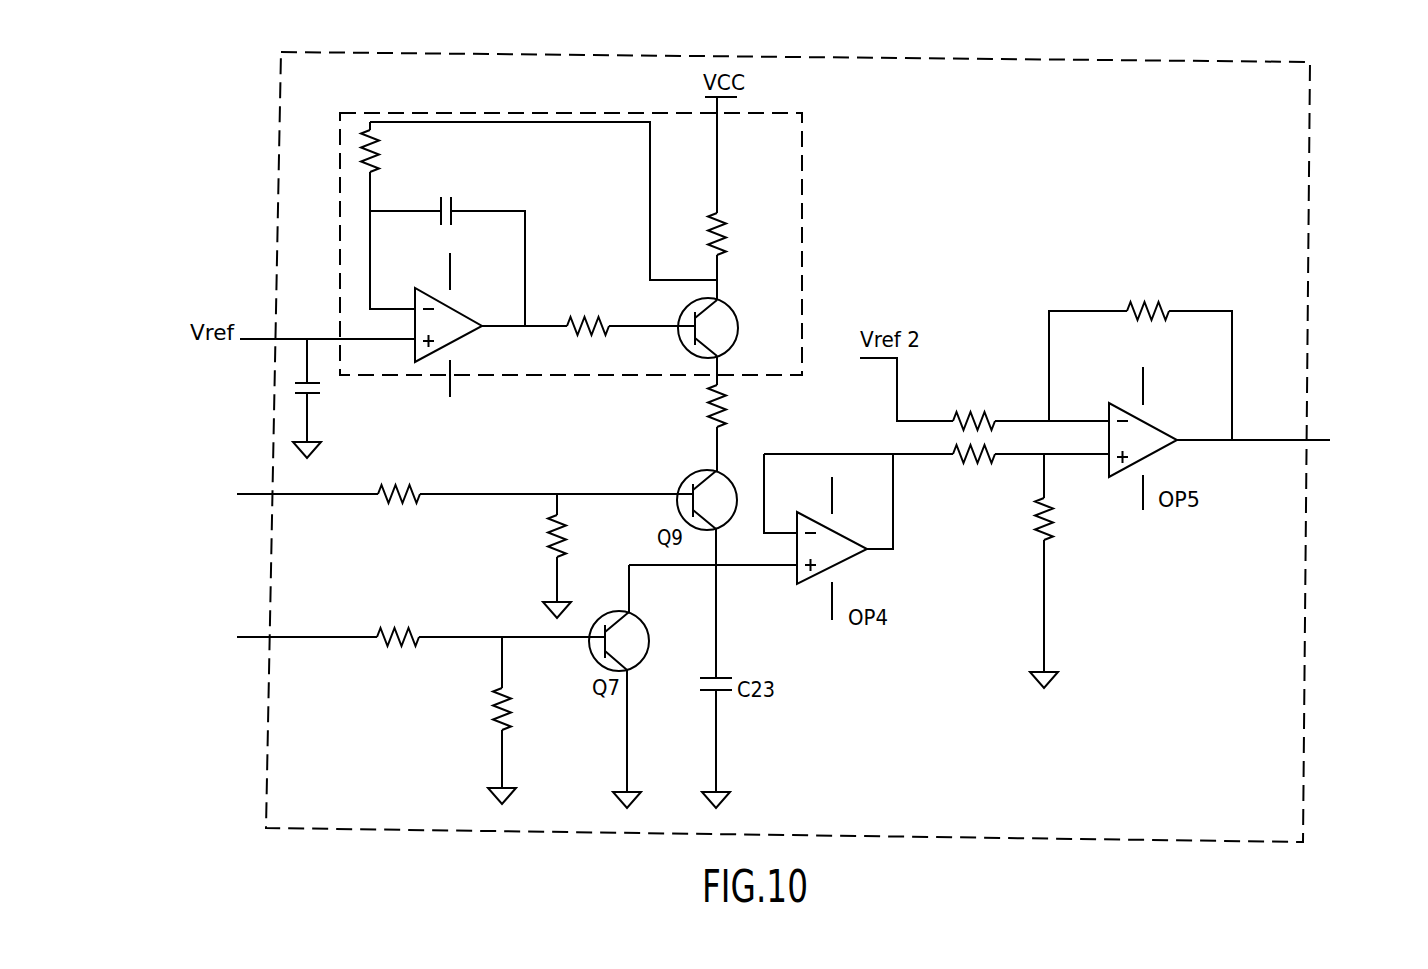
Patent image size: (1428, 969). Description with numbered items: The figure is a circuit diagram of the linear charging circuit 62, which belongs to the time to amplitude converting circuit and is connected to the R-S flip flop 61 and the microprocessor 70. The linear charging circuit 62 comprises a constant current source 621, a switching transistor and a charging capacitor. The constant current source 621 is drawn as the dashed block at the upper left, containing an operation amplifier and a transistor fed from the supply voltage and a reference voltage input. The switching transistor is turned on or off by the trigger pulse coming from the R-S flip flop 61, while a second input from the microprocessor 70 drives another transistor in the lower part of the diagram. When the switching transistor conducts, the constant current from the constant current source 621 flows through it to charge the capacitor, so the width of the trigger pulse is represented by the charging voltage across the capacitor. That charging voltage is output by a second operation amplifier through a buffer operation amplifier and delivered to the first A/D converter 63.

The R-S flip flop 61 is at (448, 546).
The microprocessor 70 is at (402, 711).
The first A/D converter 63 is at (1271, 442).
The linear charging circuit 62 is at (1310, 652).
The constant current source 621 is at (800, 113).